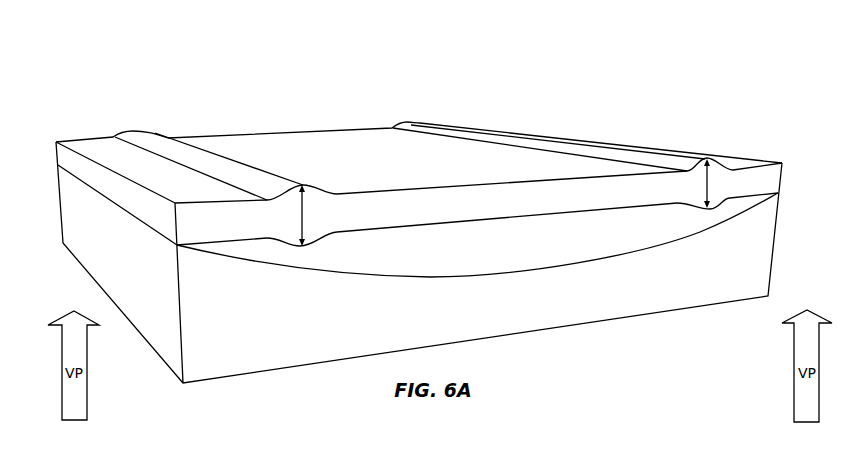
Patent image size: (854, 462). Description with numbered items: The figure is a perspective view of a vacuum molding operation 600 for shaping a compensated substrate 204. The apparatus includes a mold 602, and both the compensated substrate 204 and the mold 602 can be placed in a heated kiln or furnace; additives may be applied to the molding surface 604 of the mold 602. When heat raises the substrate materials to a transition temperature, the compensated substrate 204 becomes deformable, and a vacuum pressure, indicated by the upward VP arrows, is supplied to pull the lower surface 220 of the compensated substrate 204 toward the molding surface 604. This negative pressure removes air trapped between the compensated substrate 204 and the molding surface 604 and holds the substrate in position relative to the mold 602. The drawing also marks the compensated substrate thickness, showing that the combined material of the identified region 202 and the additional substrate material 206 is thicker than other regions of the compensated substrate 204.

The vacuum molding operation 600 is at (143, 60).
The mold 602 is at (203, 360).
The molding surface 604 is at (575, 244).
The compensated substrate 204 is at (475, 212).
The identified region 202 is at (265, 228).
The additional substrate material 206 is at (718, 160).
The lower surface 220 is at (392, 239).